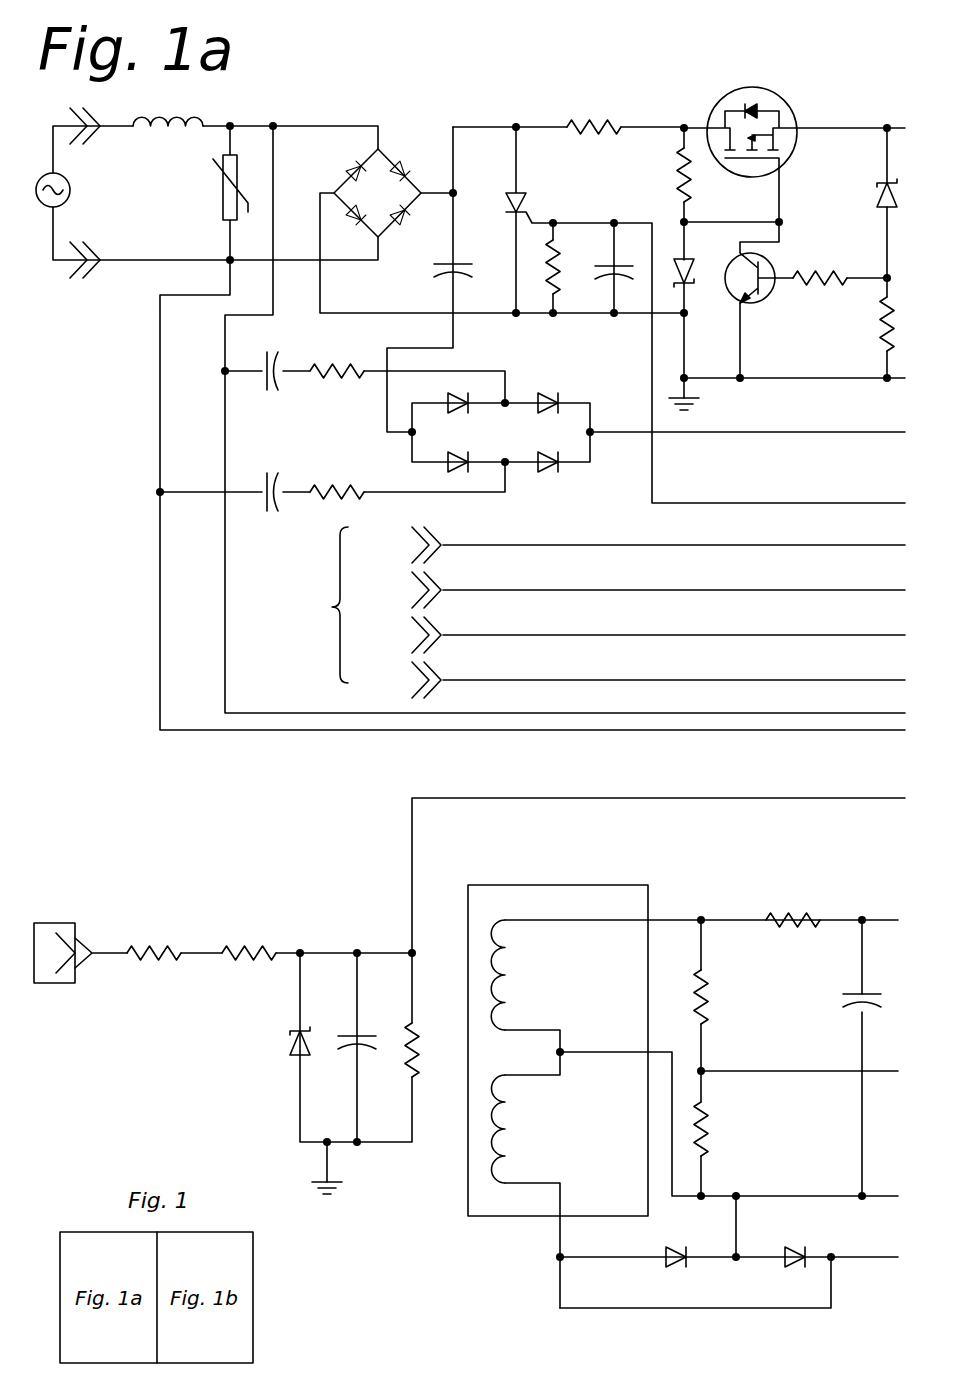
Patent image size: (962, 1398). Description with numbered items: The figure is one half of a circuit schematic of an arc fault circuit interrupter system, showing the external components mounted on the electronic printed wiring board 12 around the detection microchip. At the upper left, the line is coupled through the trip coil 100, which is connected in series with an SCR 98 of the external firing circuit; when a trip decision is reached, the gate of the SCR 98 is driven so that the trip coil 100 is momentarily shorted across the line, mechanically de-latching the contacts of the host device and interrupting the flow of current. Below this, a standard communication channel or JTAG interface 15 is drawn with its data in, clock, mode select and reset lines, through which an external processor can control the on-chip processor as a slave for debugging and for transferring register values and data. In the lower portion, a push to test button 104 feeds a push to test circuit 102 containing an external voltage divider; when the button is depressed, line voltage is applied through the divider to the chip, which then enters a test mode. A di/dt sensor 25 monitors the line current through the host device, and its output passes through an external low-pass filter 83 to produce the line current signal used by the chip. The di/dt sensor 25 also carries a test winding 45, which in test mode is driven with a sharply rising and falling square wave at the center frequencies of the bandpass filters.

The electronic printed wiring board 12 is at (112, 812).
The JTAG interface 15 is at (305, 606).
The di/dt sensor 25 is at (613, 1054).
The test winding 45 is at (497, 1177).
The low-pass filter 83 is at (855, 995).
The SCR 98 is at (511, 190).
The trip coil 100 is at (166, 120).
The push to test circuit 102 is at (167, 932).
The push to test button 104 is at (62, 923).